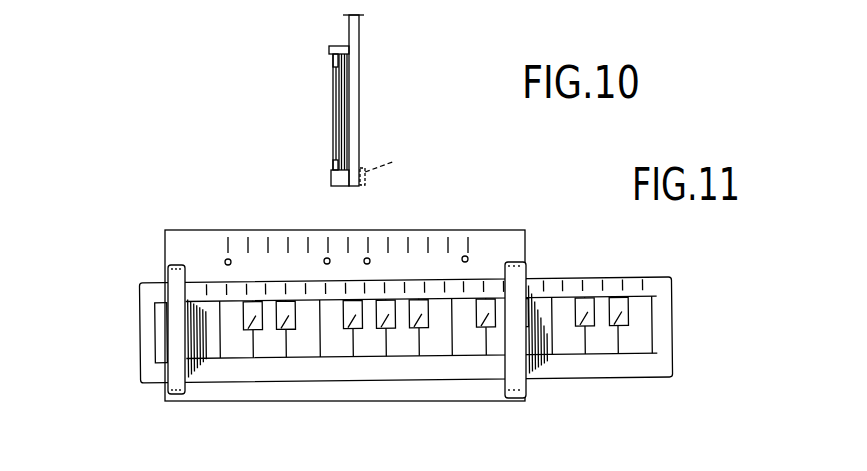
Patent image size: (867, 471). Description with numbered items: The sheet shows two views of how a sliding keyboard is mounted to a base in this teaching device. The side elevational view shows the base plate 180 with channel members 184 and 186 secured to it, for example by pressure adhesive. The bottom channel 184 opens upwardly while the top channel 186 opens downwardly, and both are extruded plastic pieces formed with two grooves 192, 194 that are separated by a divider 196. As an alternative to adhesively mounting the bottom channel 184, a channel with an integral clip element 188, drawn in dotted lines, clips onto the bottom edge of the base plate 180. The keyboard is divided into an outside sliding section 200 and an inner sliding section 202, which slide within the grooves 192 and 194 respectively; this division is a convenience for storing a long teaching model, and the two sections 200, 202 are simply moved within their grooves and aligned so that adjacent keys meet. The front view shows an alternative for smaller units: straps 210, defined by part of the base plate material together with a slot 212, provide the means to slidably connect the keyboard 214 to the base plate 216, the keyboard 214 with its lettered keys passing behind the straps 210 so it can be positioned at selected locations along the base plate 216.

In FIG. 10, the base plate 180 is at (355, 23).
In FIG. 10, the bottom channel member 184 is at (333, 187).
In FIG. 10, the top channel member 186 is at (333, 47).
In FIG. 10, the integral clip element 188 is at (395, 161).
In FIG. 10, the groove 192 is at (333, 60).
In FIG. 10, the groove 194 is at (335, 62).
In FIG. 10, the divider 196 is at (335, 75).
In FIG. 10, the outside sliding section 200 is at (347, 122).
In FIG. 10, the inner sliding section 202 is at (340, 121).
In FIG. 11, the strap 210 is at (170, 270).
In FIG. 11, the slot 212 is at (195, 395).
In FIG. 11, the keyboard 214 is at (674, 338).
In FIG. 11, the base plate 216 is at (433, 392).